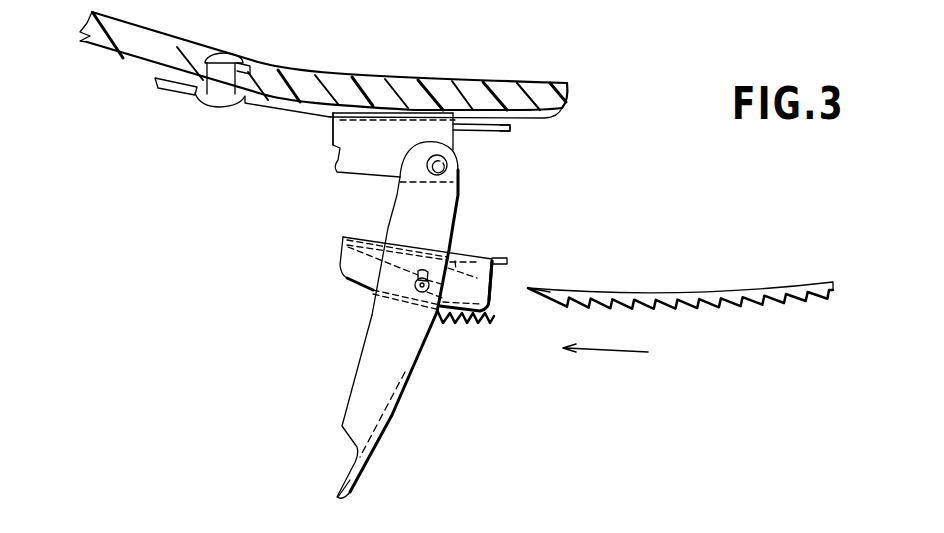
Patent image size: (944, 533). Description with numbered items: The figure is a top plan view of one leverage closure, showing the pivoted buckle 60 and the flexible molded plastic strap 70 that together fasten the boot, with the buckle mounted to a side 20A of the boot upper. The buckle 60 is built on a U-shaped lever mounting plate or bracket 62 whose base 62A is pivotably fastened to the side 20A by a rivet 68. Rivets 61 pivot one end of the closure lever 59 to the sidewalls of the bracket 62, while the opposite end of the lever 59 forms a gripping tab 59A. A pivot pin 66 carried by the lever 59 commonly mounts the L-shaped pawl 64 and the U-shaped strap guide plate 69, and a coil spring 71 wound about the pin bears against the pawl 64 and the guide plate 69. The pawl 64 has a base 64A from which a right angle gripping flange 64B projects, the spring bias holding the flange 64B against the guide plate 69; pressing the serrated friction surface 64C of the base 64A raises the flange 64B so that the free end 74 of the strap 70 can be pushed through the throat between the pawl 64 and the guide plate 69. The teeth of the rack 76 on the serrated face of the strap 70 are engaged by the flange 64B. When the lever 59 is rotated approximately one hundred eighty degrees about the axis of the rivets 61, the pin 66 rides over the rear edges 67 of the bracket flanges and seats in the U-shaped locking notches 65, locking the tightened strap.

The side of boot upper 20A is at (118, 57).
The closure lever 59 is at (366, 384).
The gripping tab 59A is at (350, 491).
The buckle 60 is at (524, 208).
The rivets 61 is at (432, 156).
The lever mounting plate 62 is at (519, 130).
The base of lever mounting plate 62A is at (478, 133).
The pawl 64 is at (452, 337).
The pawl base 64A is at (497, 315).
The gripping flange 64B is at (345, 258).
The serrated friction surface 64C is at (463, 327).
The locking notches 65 is at (333, 153).
The pivot pin 66 is at (420, 292).
The rear edges 67 is at (330, 130).
The rivet 68 is at (233, 56).
The strap guide plate 69 is at (343, 237).
The strap 70 is at (814, 280).
The coil spring 71 is at (488, 254).
The free end of strap 74 is at (552, 292).
The rack 76 is at (733, 305).